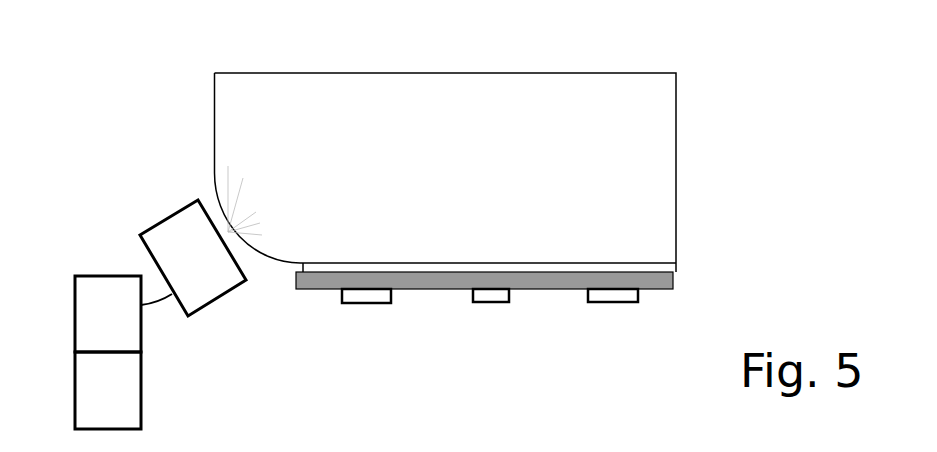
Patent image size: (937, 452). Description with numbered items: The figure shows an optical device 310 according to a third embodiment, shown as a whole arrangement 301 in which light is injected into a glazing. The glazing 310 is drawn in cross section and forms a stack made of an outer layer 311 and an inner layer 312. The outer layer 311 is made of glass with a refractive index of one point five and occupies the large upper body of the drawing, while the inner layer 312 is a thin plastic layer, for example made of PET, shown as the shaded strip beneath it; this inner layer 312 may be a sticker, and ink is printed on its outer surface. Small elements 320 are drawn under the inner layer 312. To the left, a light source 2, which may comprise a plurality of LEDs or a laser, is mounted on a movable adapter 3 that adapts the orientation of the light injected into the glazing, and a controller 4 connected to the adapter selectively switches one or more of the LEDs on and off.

The optical measurement arrangement 301 is at (180, 69).
The optical device 310 is at (417, 50).
The outer layer 311 is at (650, 157).
The inner layer 312 is at (663, 281).
The contact pads 320 is at (502, 300).
The light source 2 is at (171, 212).
The movable adapter 3 is at (100, 273).
The controller 4 is at (97, 390).